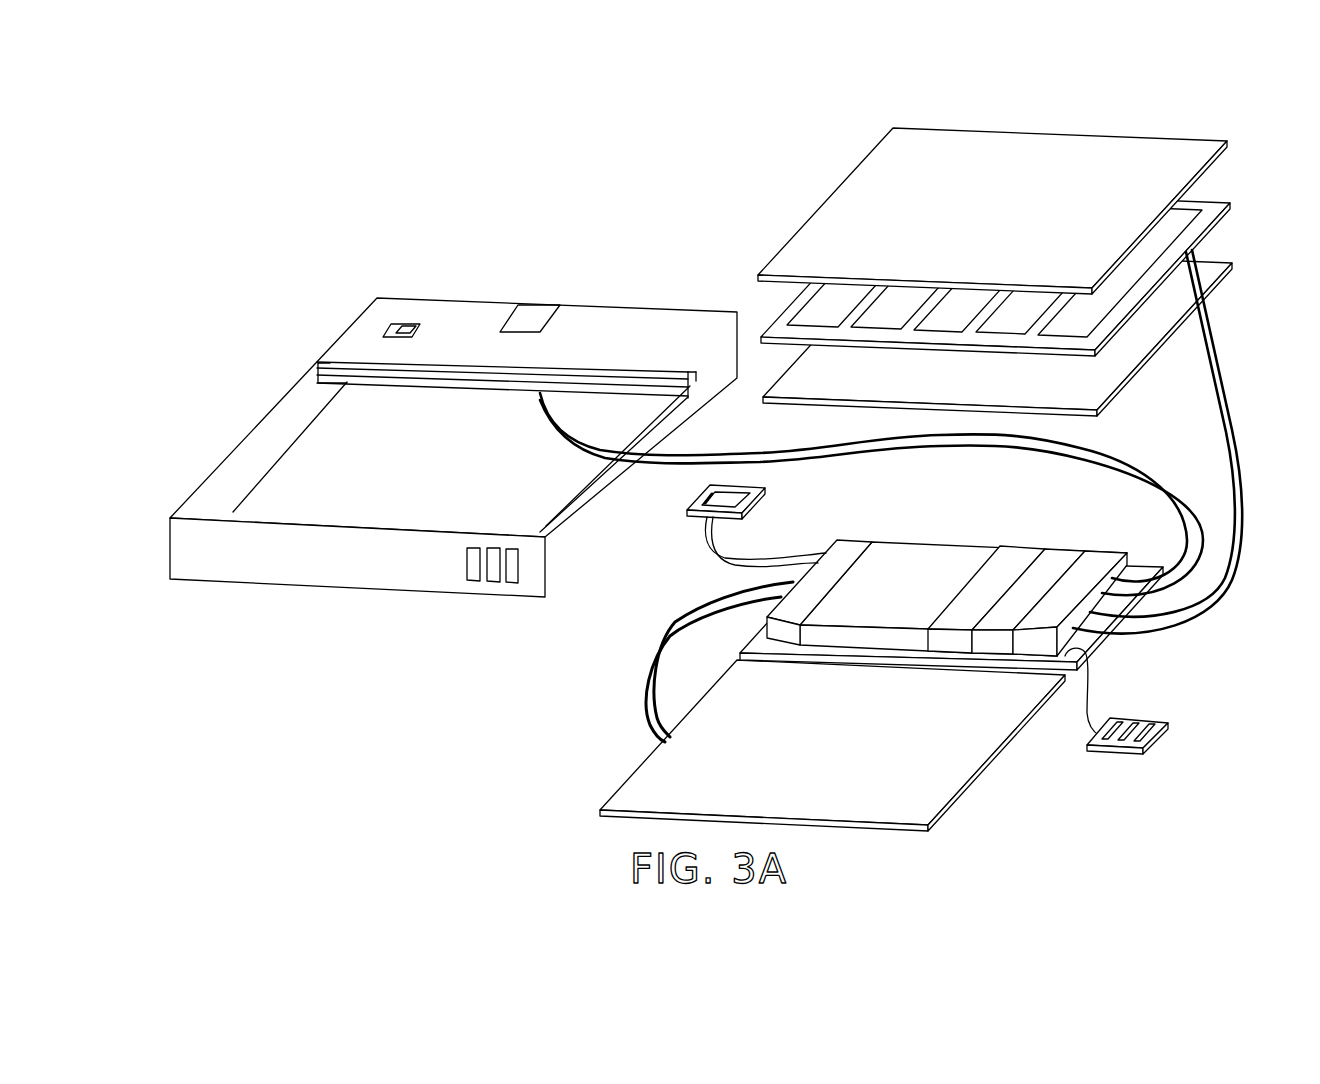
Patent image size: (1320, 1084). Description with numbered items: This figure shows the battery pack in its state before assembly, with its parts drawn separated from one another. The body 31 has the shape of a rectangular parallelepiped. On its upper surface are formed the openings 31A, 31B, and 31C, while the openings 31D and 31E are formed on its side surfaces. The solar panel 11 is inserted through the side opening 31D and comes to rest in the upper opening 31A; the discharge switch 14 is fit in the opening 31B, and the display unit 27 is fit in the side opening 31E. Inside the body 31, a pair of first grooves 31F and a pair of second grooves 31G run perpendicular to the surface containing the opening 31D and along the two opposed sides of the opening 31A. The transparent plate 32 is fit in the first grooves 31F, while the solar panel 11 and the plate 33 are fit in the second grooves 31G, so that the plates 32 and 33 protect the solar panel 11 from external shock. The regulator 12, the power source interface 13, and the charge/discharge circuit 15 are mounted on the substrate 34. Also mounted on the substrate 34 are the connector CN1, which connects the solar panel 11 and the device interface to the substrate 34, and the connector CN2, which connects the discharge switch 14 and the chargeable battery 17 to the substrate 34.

The solar panel 11 is at (1215, 205).
The transparent plate 32 is at (1213, 143).
The plate 33 is at (1215, 265).
The body 31 is at (630, 318).
The opening 31A is at (355, 470).
The opening 31B is at (402, 318).
The opening 31C is at (532, 320).
The opening 31D is at (583, 517).
The opening 31E is at (460, 560).
The first grooves 31F is at (317, 382).
The second grooves 31G is at (331, 390).
The discharge switch 14 is at (692, 512).
The substrate 34 is at (758, 642).
The chargeable battery 17 is at (638, 790).
The display unit 27 is at (1160, 725).
The charge/discharge circuit 15 is at (938, 553).
The regulator 12 is at (1022, 560).
The power source interface 13 is at (1065, 557).
The connector CN1 is at (1103, 560).
The connector CN2 is at (850, 553).